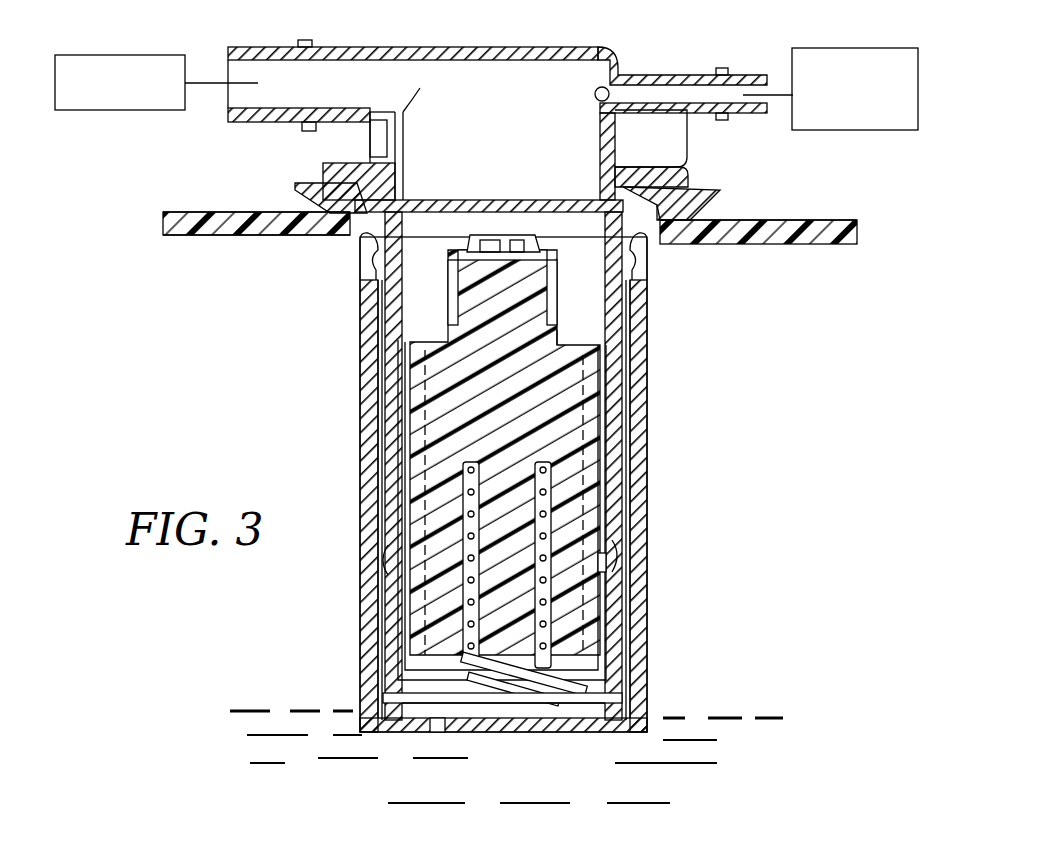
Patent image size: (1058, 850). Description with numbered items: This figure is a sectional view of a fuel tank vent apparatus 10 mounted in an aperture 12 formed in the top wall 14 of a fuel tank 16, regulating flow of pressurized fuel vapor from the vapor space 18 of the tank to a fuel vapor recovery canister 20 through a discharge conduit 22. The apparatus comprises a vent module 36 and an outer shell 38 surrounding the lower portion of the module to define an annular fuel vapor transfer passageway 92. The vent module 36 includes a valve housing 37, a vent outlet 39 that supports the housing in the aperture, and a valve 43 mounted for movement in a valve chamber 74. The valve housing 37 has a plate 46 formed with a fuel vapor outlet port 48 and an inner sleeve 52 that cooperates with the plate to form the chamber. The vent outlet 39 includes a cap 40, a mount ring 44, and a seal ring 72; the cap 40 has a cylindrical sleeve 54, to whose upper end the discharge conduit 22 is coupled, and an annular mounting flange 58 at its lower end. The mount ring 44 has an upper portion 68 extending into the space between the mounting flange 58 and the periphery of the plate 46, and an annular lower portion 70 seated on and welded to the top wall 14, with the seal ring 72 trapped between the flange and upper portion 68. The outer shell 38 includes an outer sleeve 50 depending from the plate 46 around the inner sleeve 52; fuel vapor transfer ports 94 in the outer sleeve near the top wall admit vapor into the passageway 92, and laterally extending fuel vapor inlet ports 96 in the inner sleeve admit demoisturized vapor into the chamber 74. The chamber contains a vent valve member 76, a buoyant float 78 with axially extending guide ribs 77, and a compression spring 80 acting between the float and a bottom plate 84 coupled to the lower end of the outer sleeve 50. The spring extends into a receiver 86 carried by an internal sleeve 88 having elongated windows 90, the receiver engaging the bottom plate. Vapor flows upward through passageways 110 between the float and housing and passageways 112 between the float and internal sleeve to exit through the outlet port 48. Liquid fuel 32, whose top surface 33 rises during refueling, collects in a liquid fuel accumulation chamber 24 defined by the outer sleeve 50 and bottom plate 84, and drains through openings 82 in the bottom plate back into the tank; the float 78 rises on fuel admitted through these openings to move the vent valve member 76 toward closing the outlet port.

The fuel tank vent apparatus 10 is at (262, 385).
The aperture 12 is at (352, 240).
The top wall 14 is at (232, 212).
The fuel tank 16 is at (192, 211).
The vapor space 18 is at (782, 263).
The fuel vapor recovery canister 20 is at (115, 57).
The discharge conduit 22 is at (202, 83).
The liquid fuel accumulation chamber 24 is at (650, 712).
The liquid fuel 32 is at (482, 769).
The top surface 33 is at (262, 705).
The vent module 36 is at (630, 62).
The valve housing 37 is at (418, 200).
The outer shell 38 is at (652, 365).
The vent outlet 39 is at (300, 147).
The cap 40 is at (624, 52).
The valve 43 is at (458, 232).
The mount ring 44 is at (296, 196).
The plate 46 is at (430, 200).
The fuel vapor outlet port 48 is at (522, 210).
The outer sleeve 50 is at (640, 378).
The inner sleeve 52 is at (625, 450).
The cylindrical sleeve 54 is at (620, 155).
The annular mounting flange 58 is at (640, 172).
The upper portion 68 is at (695, 190).
The annular lower portion 70 is at (690, 205).
The seal ring 72 is at (382, 178).
The valve chamber 74 is at (567, 233).
The vent valve member 76 is at (455, 252).
The guide ribs 77 is at (412, 378).
The buoyant float 78 is at (446, 340).
The compression spring 80 is at (512, 725).
The openings 82 is at (420, 732).
The bottom plate 84 is at (612, 728).
The receiver 86 is at (438, 732).
The internal sleeve 88 is at (410, 615).
The windows 90 is at (612, 430).
The fuel vapor transfer passageway 92 is at (380, 380).
The fuel vapor transfer ports 94 is at (365, 268).
The fuel vapor inlet ports 96 is at (390, 555).
The passageways 110 is at (612, 595).
The passageways 112 is at (596, 340).